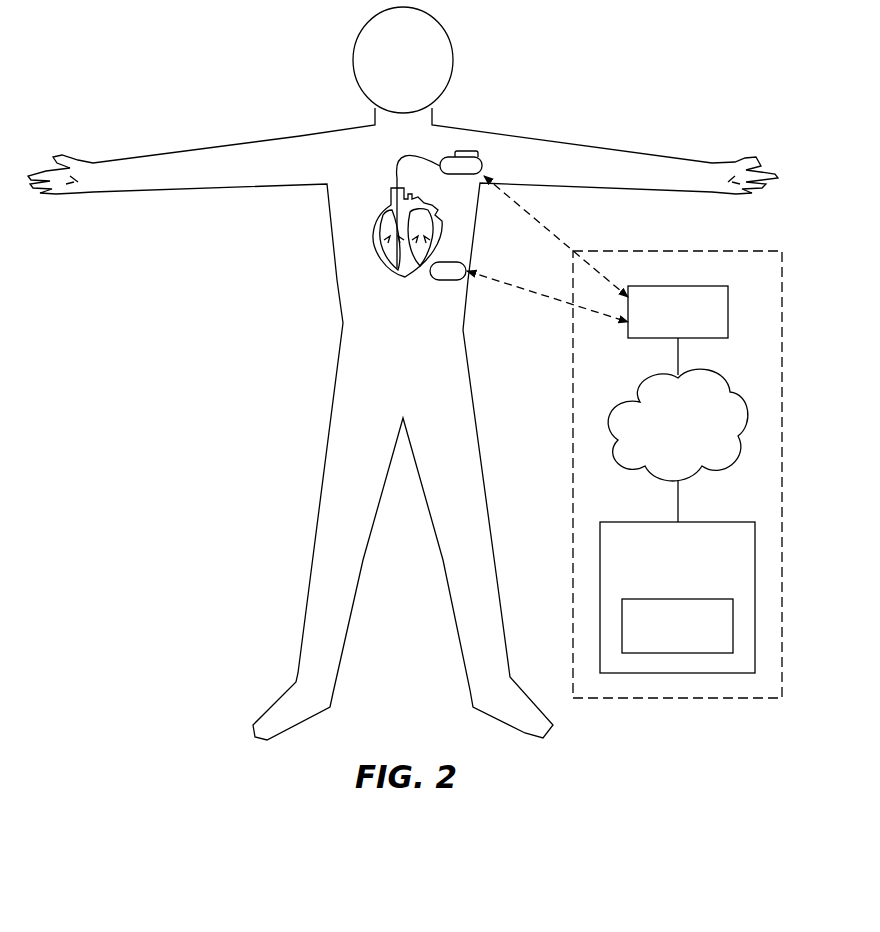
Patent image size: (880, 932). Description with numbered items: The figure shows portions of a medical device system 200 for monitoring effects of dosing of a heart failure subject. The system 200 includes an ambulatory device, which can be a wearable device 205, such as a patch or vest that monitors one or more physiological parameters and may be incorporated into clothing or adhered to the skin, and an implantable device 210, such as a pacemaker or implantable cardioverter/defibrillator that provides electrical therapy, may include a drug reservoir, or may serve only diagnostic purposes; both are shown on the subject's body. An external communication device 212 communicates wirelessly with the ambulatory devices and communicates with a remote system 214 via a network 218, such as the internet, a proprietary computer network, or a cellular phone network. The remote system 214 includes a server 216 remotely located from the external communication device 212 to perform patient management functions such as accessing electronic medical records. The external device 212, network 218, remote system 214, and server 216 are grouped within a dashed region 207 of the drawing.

The medical device system 200 is at (217, 35).
The wearable device 205 is at (438, 281).
The remote communication system 207 is at (678, 251).
The implantable device 210 is at (462, 152).
The external communication device 212 is at (678, 286).
The remote system 214 is at (700, 522).
The server 216 is at (678, 599).
The network 218 is at (718, 396).